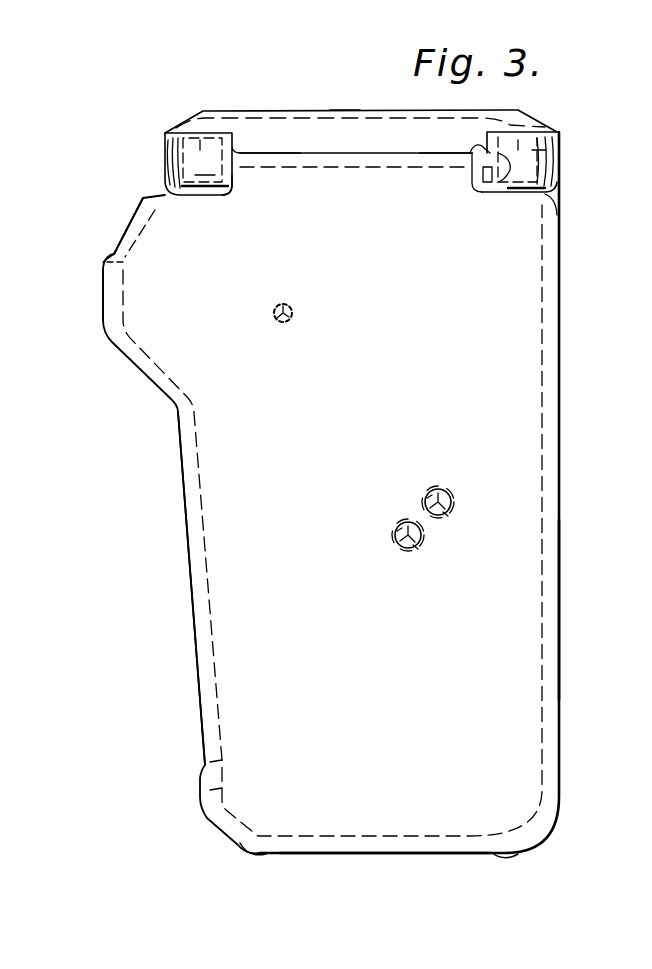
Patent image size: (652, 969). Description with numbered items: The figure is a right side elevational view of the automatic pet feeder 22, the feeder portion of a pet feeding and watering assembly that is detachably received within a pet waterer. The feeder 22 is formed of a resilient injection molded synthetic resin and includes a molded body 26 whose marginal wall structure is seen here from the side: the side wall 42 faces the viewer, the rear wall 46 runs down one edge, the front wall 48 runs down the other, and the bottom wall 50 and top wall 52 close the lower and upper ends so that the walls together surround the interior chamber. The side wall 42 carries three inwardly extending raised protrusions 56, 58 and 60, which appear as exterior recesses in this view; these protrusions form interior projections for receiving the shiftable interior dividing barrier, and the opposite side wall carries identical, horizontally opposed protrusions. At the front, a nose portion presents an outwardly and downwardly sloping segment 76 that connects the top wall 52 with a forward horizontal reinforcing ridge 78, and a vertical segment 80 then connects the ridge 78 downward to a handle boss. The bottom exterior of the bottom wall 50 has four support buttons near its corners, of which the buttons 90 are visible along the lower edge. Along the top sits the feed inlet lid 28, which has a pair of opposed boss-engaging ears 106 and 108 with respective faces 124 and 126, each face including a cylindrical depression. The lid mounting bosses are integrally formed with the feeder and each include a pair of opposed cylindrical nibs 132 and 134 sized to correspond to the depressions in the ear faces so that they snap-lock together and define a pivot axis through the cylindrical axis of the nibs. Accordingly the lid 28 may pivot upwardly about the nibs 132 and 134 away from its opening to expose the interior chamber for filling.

The automatic pet feeder 22 is at (319, 469).
The molded body 26 is at (202, 660).
The feed inlet lid 28 is at (297, 110).
The side wall 42 is at (485, 297).
The rear wall 46 is at (560, 545).
The front wall 48 is at (195, 597).
The bottom wall 50 is at (392, 853).
The top wall 52 is at (345, 110).
The raised protrusion 56 is at (293, 318).
The raised protrusion 58 is at (408, 551).
The raised protrusion 60 is at (452, 502).
The outwardly and downwardly sloping segment 76 is at (125, 228).
The forward horizontal reinforcing ridge 78 is at (101, 262).
The vertical segment 80 is at (102, 300).
The support button 90 is at (259, 858).
The boss-engaging ear 106 is at (560, 153).
The boss-engaging ear 108 is at (190, 175).
The face 124 is at (233, 147).
The face 126 is at (490, 138).
The cylindrical nib 132 is at (237, 178).
The cylindrical nib 134 is at (487, 178).